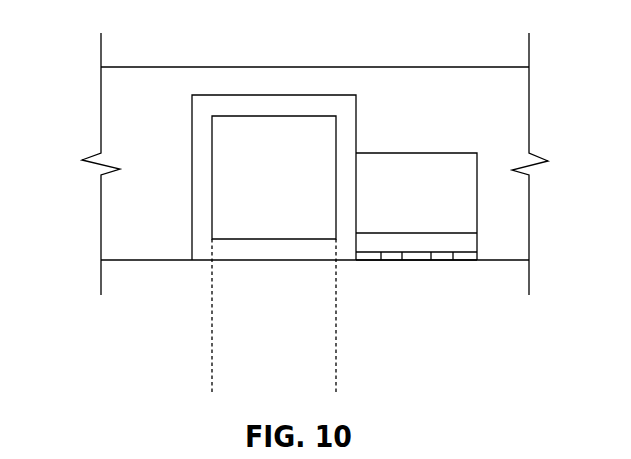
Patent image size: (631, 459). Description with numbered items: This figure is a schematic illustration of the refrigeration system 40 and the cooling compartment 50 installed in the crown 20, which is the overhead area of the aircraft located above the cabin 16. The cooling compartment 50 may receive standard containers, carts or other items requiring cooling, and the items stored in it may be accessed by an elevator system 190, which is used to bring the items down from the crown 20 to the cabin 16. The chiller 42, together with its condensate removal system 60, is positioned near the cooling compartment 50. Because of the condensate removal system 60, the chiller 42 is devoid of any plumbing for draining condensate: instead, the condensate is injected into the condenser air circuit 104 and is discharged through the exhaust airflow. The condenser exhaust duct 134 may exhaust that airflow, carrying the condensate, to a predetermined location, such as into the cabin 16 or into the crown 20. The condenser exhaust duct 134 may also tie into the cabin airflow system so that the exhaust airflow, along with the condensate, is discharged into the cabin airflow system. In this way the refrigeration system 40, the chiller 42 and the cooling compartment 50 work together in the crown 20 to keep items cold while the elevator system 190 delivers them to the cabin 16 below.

The cabin 16 is at (152, 333).
The crown 20 is at (138, 120).
The refrigeration system 40 is at (438, 113).
The chiller 42 is at (462, 152).
The cooling compartment 50 is at (248, 112).
The condensate removal system 60 is at (477, 242).
The condenser air circuit 104 is at (478, 263).
The condenser exhaust duct 134 is at (393, 261).
The elevator system 190 is at (211, 358).